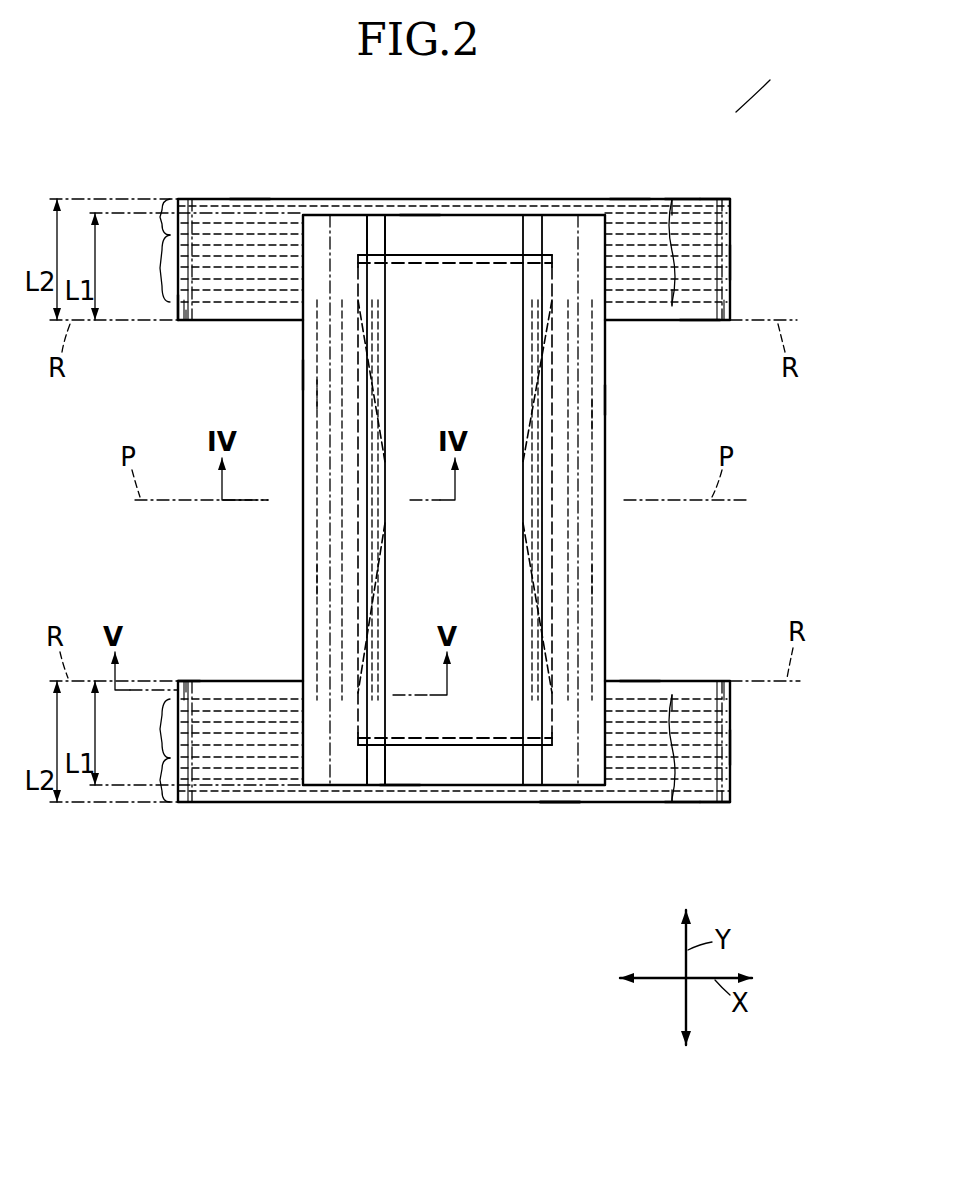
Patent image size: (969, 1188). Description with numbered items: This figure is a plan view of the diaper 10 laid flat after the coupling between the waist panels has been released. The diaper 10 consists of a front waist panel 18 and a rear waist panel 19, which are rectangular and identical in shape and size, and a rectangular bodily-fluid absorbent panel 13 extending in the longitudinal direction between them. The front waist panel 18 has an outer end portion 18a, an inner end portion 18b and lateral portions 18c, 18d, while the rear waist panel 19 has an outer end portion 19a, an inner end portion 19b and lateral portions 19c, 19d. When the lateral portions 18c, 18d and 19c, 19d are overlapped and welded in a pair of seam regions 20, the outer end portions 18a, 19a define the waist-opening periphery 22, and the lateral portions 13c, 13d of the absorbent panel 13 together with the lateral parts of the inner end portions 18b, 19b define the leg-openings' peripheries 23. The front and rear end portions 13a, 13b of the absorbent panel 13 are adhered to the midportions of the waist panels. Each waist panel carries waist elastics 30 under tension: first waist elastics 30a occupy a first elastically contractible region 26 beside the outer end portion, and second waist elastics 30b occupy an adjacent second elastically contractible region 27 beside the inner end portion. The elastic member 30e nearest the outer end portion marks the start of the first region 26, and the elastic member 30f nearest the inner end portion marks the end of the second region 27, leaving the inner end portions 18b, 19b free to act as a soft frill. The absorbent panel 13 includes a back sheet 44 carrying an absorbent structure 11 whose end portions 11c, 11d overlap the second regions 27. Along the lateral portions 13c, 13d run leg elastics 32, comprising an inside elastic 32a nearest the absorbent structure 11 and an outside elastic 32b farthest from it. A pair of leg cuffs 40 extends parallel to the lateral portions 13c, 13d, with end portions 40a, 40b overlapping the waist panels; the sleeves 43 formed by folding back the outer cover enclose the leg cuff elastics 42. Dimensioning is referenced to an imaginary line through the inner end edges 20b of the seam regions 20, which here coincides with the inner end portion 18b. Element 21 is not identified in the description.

The diaper 10 is at (736, 112).
The absorbent structure 11 is at (458, 713).
The end portion of absorbent structure 11c is at (487, 747).
The end portion of absorbent structure 11d is at (470, 255).
The bodily-fluid absorbent panel 13 is at (505, 233).
The front end portion of bodily-fluid absorbent panel 13a is at (400, 788).
The rear end portion of bodily-fluid absorbent panel 13b is at (420, 215).
The lateral portion of bodily-fluid absorbent panel 13c is at (303, 372).
The lateral portion of bodily-fluid absorbent panel 13d is at (607, 397).
The front waist panel 18 is at (231, 802).
The outer end portion of front waist panel 18a is at (560, 802).
The inner end portion of front waist panel 18b is at (640, 685).
The lateral portion of front waist panel 18c is at (186, 685).
The lateral portion of front waist panel 18d is at (732, 747).
The rear waist panel 19 is at (248, 198).
The outer end portion of rear waist panel 19a is at (627, 199).
The inner end portion of rear waist panel 19b is at (697, 321).
The lateral portion of rear waist panel 19c is at (180, 312).
The lateral portion of rear waist panel 19d is at (730, 262).
The seam region 20 is at (188, 199).
The inner end edge of seam region 20b is at (190, 318).
The leg opening edge 21 is at (192, 307).
The waist-opening periphery 22 is at (432, 501).
The leg-opening periphery 23 is at (303, 518).
The first elastically contractible region 26 is at (140, 500).
The second elastically contractible region 27 is at (146, 496).
The waist elastics 30 is at (715, 312).
The first waist elastics 30a is at (680, 205).
The second waist elastics 30b is at (675, 322).
The elastic member closest to outer end portion 30e is at (718, 203).
The elastic member closest to inner end portion 30f is at (705, 322).
The leg elastics 32 is at (318, 557).
The inside elastic 32a is at (330, 392).
The outside elastic 32b is at (305, 580).
The leg cuff 40 is at (348, 230).
The end portion of leg cuff 40a is at (375, 762).
The end portion of leg cuff 40b is at (372, 228).
The leg cuff elastics 42 is at (375, 362).
The sleeve 43 is at (370, 245).
The back sheet 44 is at (345, 768).